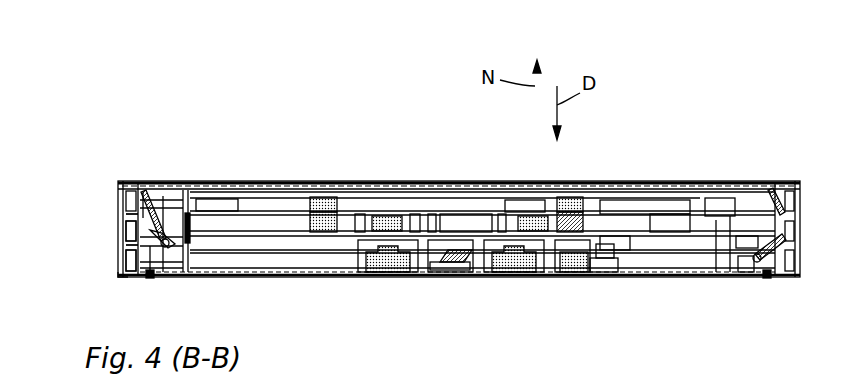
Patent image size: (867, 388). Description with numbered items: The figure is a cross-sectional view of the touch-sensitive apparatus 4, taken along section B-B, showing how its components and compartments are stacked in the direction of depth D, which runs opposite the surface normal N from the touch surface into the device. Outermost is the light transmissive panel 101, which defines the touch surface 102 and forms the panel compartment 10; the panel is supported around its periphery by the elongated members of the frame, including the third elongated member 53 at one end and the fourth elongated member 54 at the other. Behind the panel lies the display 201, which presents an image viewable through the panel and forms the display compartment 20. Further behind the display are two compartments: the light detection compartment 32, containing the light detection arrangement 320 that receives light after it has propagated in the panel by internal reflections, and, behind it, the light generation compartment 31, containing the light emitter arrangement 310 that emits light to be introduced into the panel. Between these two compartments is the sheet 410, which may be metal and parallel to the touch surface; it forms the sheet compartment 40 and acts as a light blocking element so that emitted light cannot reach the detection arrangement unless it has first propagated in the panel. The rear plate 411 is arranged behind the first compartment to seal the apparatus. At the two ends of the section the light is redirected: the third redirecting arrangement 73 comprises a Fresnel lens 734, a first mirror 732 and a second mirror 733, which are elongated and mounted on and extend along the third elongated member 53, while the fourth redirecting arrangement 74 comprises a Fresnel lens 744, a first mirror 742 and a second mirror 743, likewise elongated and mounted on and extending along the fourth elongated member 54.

The touch-sensitive apparatus 4 is at (741, 74).
The panel compartment 10 is at (110, 183).
The display compartment 20 is at (110, 197).
The light generation compartment 31 is at (110, 254).
The light detection compartment 32 is at (110, 224).
The sheet compartment 40 is at (110, 238).
The fourth elongated member 54 is at (118, 276).
The fourth redirecting arrangement 74 is at (138, 217).
The first mirror 742 is at (141, 192).
The second mirror 743 is at (165, 262).
The Fresnel lens 744 is at (185, 205).
The light transmissive panel 101 is at (233, 190).
The touch surface 102 is at (246, 178).
The display 201 is at (333, 212).
The light detection arrangement 320 is at (446, 143).
The light emitter arrangement 310 is at (441, 299).
The rear plate 411 is at (580, 277).
The sheet 410 is at (640, 278).
The third redirecting arrangement 73 is at (734, 247).
The second mirror 733 is at (770, 192).
The Fresnel lens 734 is at (725, 260).
The first mirror 732 is at (748, 277).
The third elongated member 53 is at (783, 280).